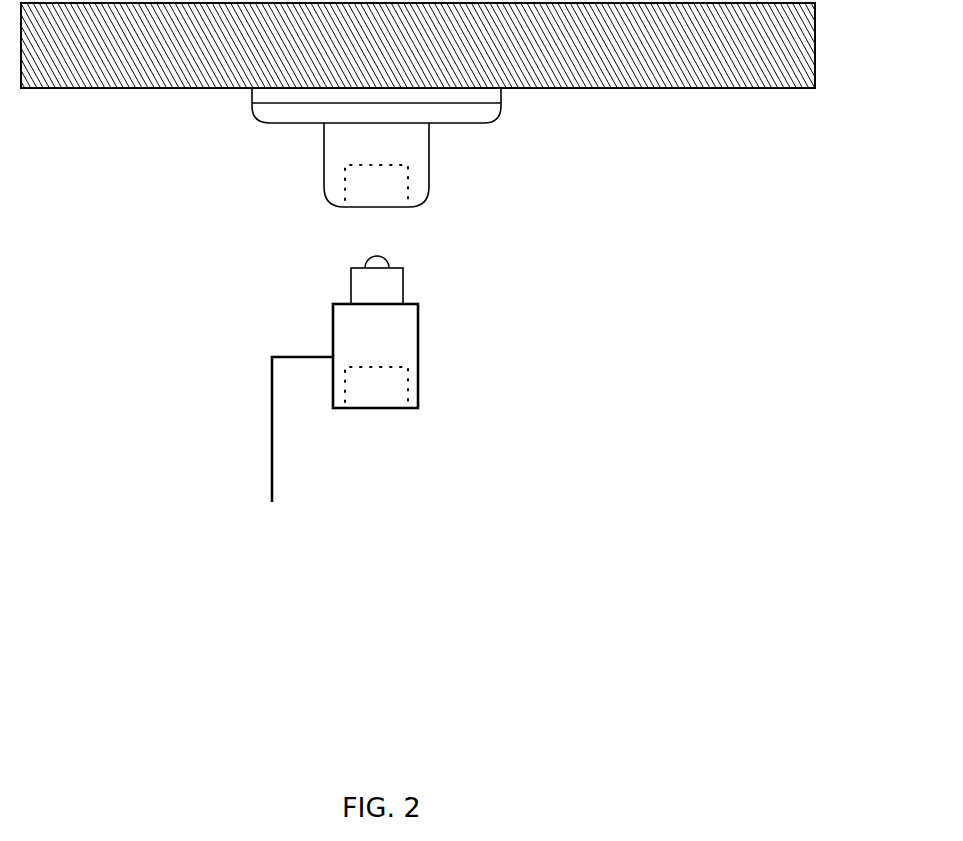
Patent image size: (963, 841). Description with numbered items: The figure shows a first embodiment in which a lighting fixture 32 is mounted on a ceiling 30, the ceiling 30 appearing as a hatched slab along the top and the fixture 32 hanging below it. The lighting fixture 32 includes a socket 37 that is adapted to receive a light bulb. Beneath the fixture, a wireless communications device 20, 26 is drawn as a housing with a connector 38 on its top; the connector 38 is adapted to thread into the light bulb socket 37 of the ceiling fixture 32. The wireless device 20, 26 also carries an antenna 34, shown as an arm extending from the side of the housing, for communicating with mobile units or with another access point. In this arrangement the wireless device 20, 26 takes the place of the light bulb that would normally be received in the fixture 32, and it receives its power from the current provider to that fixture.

The ceiling 30 is at (588, 90).
The lighting fixture 32 is at (430, 156).
The socket 37 is at (373, 208).
The connector 38 is at (403, 295).
The wireless communications device 20 is at (528, 357).
The wireless communications device 26 is at (418, 355).
The antenna 34 is at (272, 455).